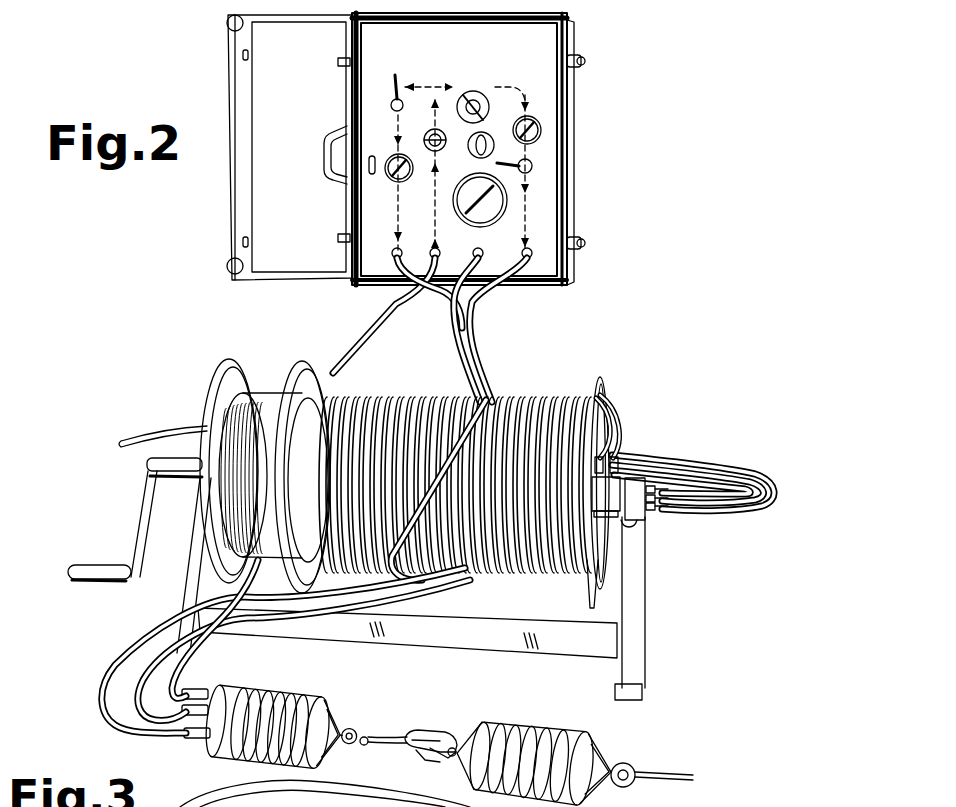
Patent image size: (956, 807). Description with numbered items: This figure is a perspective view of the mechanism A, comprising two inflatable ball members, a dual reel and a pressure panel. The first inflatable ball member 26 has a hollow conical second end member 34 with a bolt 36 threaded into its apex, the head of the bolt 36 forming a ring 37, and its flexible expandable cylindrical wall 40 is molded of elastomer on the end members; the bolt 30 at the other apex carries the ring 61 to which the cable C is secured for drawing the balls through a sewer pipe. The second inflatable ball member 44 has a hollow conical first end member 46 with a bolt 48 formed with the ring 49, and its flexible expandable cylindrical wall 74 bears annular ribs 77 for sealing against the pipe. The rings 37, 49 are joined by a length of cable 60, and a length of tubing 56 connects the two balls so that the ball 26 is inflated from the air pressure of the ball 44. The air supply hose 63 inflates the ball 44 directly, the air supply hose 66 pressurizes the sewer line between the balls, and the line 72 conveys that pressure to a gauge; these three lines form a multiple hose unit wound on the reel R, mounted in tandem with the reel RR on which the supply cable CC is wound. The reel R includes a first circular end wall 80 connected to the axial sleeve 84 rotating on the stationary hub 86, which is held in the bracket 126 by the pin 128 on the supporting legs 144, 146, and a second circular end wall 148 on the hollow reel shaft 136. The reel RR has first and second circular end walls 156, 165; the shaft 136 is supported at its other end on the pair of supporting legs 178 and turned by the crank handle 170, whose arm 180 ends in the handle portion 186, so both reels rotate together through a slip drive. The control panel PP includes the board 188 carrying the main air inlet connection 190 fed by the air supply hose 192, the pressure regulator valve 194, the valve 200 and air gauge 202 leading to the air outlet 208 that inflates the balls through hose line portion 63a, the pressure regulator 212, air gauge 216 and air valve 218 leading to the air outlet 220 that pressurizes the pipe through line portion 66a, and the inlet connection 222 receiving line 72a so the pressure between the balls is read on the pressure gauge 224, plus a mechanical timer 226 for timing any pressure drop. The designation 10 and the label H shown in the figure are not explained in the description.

The hose assembly 10 is at (272, 800).
The first inflatable ball member 26 is at (606, 740).
The bolt 30 is at (620, 765).
The second end member 34 is at (458, 760).
The bolt 36 is at (446, 762).
The ring 37 is at (436, 755).
The flexible expandable cylindrical wall 40 is at (577, 751).
The second inflatable ball member 44 is at (300, 707).
The first end member 46 is at (326, 706).
The bolt 48 is at (337, 746).
The ring 49 is at (356, 732).
The length of tubing 56 is at (429, 750).
The length of cable 60 is at (367, 746).
The ring 61 is at (635, 781).
The air supply hose 63 is at (176, 733).
The air supply hose 66 is at (178, 716).
The line 72 is at (607, 447).
The flexible expandable cylindrical wall 74 is at (290, 705).
The annular ribs 77 is at (312, 686).
The first circular end wall 80 is at (586, 598).
The axial sleeve 84 is at (612, 484).
The stationary hub 86 is at (652, 511).
The bracket 126 is at (652, 488).
The pin 128 is at (640, 480).
The hollow reel shaft 136 is at (178, 457).
The supporting leg 144 is at (636, 626).
The supporting leg 146 is at (648, 570).
The second circular end wall 148 is at (338, 376).
The first circular end wall 156 is at (297, 362).
The second circular end wall 165 is at (226, 372).
The crank handle 170 is at (137, 492).
The supporting legs 178 is at (186, 592).
The arm 180 is at (142, 529).
The handle portion 186 is at (93, 565).
The board 188 is at (432, 164).
The main air inlet connection 190 is at (431, 250).
The air supply hose 192 is at (372, 338).
The pressure regulator valve 194 is at (433, 131).
The valve 200 is at (385, 105).
The air gauge 202 is at (392, 184).
The air outlet 208 is at (393, 252).
The pressure regulator 212 is at (477, 96).
The air gauge 216 is at (541, 125).
The air valve 218 is at (535, 163).
The air outlet 220 is at (532, 262).
The inlet connection 222 is at (496, 261).
The pressure gauge 224 is at (508, 218).
The mechanical timer 226 is at (490, 136).
The hose line portion 63a is at (462, 342).
The line portion 66a is at (486, 284).
The line 72a is at (446, 303).
The mechanism A is at (600, 356).
The cable C is at (668, 759).
The supply cable CC is at (108, 676).
The hose H is at (406, 583).
The control panel PP is at (560, 182).
The reel R is at (608, 382).
The reel RR is at (234, 364).